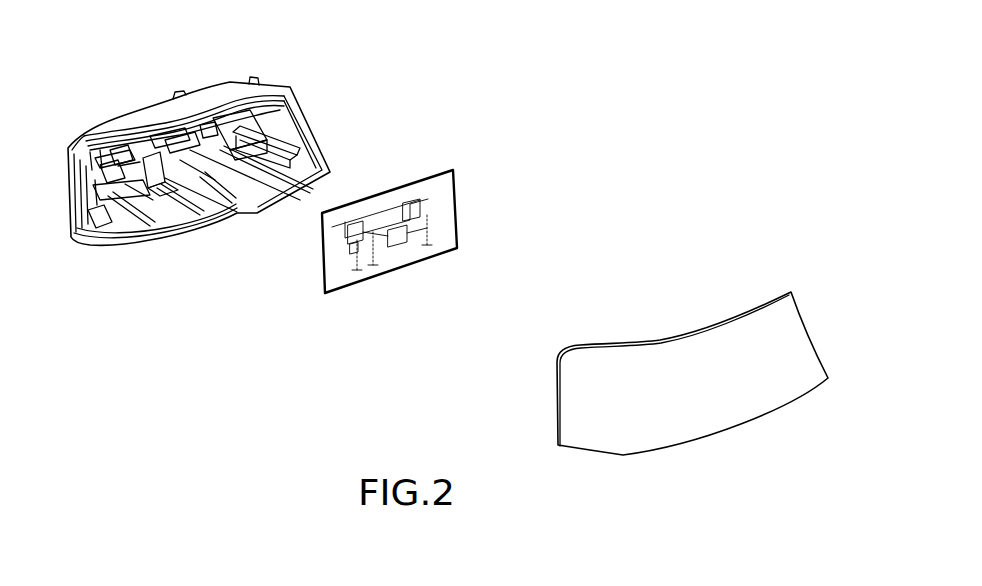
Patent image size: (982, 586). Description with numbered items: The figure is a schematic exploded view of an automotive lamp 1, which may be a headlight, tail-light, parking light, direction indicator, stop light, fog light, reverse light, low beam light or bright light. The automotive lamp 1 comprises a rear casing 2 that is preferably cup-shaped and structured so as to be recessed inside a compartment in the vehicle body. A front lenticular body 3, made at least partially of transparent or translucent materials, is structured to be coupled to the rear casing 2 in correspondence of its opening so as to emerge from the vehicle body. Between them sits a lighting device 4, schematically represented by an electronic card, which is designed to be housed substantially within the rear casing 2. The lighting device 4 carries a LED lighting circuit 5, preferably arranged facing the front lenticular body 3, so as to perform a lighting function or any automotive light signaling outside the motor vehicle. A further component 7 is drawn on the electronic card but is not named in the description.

The automotive lamp 1 is at (252, 323).
The rear casing 2 is at (315, 124).
The front lenticular body 3 is at (787, 324).
The lighting device 4 is at (447, 185).
The LED lighting circuit 5 is at (427, 215).
The sensor component 7 is at (353, 252).